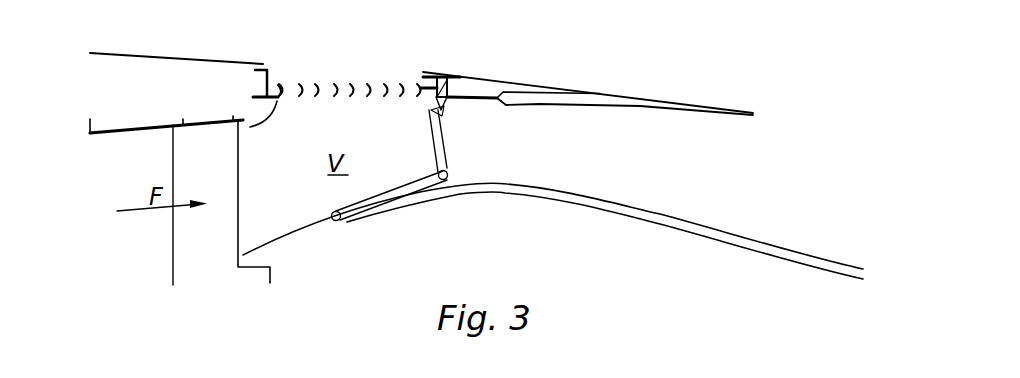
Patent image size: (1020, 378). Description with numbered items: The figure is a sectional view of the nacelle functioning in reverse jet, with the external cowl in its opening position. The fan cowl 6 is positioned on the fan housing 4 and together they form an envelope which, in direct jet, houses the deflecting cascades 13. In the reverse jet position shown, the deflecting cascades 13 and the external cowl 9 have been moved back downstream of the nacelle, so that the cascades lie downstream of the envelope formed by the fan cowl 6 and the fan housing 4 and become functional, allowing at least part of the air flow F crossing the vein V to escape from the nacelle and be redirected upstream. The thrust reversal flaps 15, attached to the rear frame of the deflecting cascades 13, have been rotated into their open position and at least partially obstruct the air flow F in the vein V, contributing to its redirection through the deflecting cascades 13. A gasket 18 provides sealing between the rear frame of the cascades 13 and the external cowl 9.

The fan housing 4 is at (129, 134).
The fan cowl 6 is at (224, 63).
The external cowl 9 is at (519, 82).
The deflecting cascades 13 is at (344, 90).
The thrust reversal flaps 15 is at (443, 143).
The gasket 18 is at (447, 83).